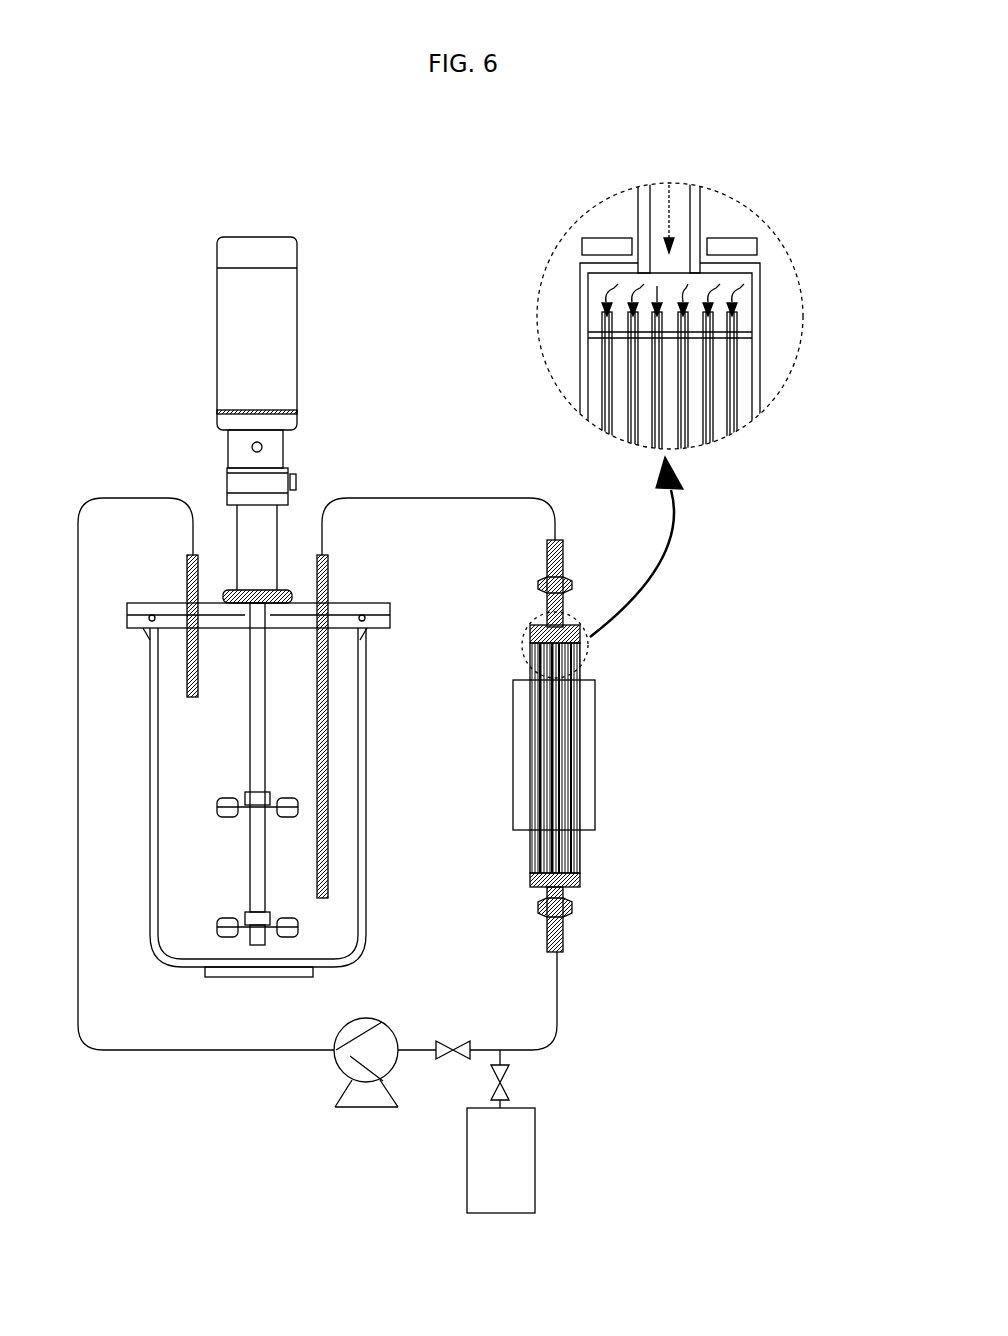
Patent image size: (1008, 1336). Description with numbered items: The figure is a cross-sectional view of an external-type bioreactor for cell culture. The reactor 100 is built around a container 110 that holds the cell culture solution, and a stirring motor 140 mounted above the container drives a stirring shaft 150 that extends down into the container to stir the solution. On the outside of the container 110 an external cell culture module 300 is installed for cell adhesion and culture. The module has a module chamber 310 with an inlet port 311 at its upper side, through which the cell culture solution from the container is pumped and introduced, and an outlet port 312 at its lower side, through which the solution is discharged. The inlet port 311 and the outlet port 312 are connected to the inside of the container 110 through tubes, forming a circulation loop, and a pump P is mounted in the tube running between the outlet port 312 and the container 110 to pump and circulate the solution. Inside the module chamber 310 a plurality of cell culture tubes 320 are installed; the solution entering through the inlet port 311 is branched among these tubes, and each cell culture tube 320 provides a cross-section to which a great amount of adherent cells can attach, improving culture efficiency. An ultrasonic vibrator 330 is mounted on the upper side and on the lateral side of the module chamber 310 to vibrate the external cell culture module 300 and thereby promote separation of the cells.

The reactor 100 is at (139, 393).
The container 110 is at (366, 722).
The stirring motor 140 is at (297, 338).
The stirring shaft 150 is at (265, 850).
The external cell culture module 300 is at (653, 675).
The module chamber 310 is at (580, 872).
The inlet port 311 is at (563, 558).
The outlet port 312 is at (560, 925).
The cell culture tube 320 is at (580, 745).
The ultrasonic vibrator 330 is at (595, 710).
The pump P is at (341, 1066).